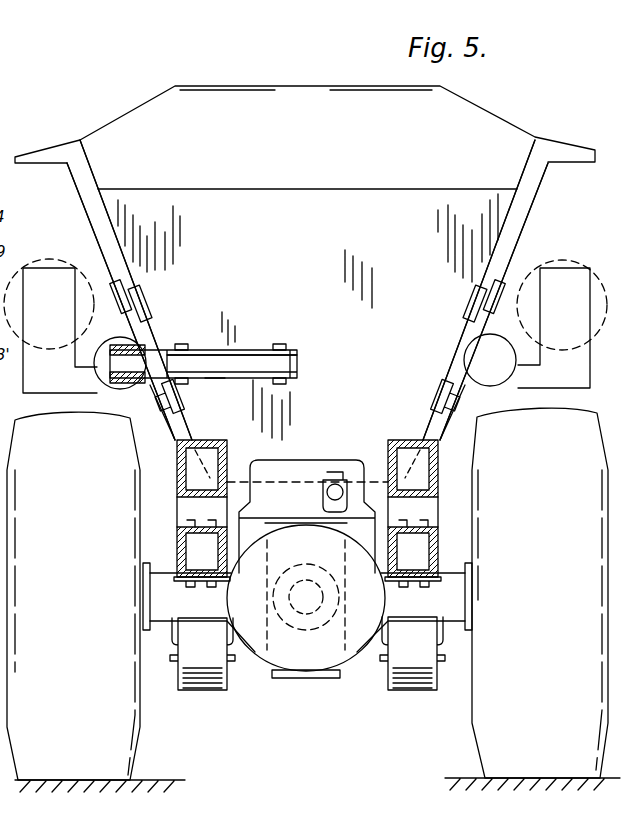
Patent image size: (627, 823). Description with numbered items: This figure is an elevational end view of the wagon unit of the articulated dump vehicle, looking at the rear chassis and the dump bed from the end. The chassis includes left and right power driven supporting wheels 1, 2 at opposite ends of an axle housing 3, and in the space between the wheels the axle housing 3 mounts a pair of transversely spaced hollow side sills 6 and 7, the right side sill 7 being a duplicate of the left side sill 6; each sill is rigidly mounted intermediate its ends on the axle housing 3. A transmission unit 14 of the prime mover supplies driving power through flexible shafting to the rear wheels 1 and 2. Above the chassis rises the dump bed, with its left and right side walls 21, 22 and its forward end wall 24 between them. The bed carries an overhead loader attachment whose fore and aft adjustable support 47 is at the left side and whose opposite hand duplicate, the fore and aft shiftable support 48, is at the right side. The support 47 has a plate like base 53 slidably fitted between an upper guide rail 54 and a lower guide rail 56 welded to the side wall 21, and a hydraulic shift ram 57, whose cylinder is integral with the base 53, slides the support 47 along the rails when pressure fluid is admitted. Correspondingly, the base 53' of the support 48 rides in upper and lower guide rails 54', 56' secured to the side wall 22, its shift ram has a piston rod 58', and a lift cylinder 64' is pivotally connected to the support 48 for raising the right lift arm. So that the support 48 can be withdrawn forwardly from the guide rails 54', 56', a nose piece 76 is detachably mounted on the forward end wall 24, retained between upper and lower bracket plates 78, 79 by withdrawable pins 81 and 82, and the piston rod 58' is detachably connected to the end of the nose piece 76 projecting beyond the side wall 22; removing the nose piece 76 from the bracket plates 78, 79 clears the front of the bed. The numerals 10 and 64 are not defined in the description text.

The left supporting wheel 1 is at (90, 712).
The right supporting wheel 2 is at (493, 717).
The axle housing 3 is at (255, 655).
The left side sill 6 is at (403, 691).
The right side sill 7 is at (205, 691).
The axle mounting bracket 10 is at (177, 461).
The transmission unit 14 is at (292, 474).
The left side wall 21 is at (505, 243).
The right side wall 22 is at (103, 252).
The forward end wall 24 is at (242, 220).
The fore and aft adjustable support 47 is at (527, 587).
The fore and aft shiftable support 48 is at (73, 596).
The plate like base 53 is at (479, 290).
The base 53' is at (136, 290).
The upper guide rail 54 is at (488, 301).
The upper guide rail 54' is at (127, 301).
The lower guide rail 56 is at (434, 407).
The lower guide rail 56' is at (183, 412).
The hydraulic shift ram 57 is at (96, 368).
The piston rod 58' is at (121, 380).
The right bearing block 64 is at (562, 313).
The lift cylinder 64' is at (50, 304).
The nose piece 76 is at (298, 362).
The upper bracket plate 78 is at (248, 349).
The lower bracket plate 79 is at (220, 380).
The withdrawable pin 81 is at (284, 345).
The withdrawable pin 82 is at (181, 344).